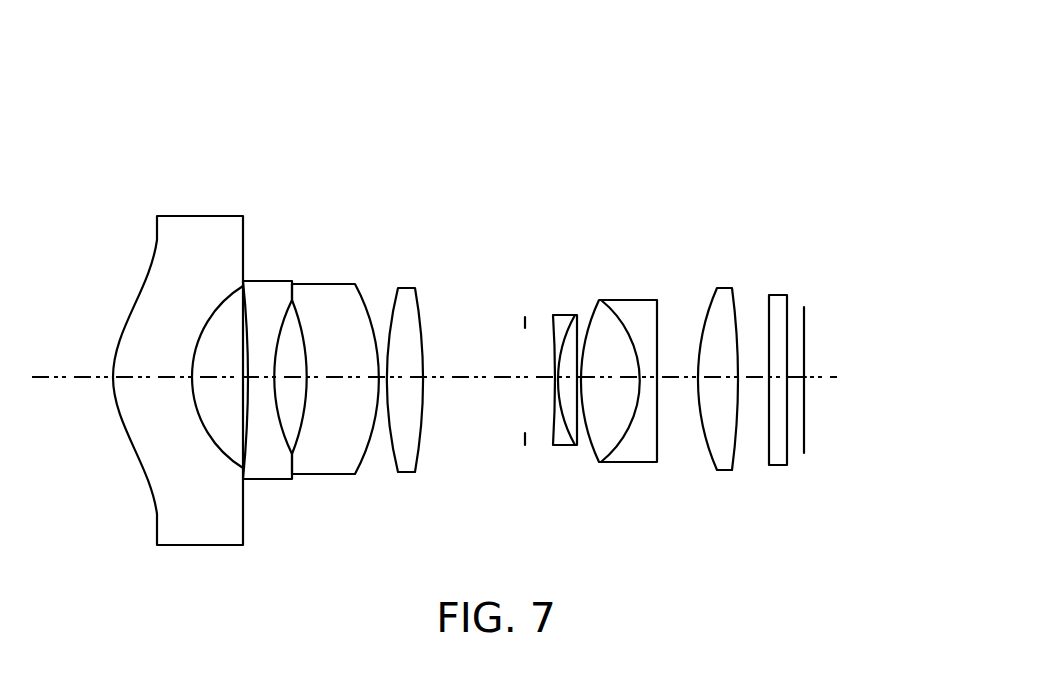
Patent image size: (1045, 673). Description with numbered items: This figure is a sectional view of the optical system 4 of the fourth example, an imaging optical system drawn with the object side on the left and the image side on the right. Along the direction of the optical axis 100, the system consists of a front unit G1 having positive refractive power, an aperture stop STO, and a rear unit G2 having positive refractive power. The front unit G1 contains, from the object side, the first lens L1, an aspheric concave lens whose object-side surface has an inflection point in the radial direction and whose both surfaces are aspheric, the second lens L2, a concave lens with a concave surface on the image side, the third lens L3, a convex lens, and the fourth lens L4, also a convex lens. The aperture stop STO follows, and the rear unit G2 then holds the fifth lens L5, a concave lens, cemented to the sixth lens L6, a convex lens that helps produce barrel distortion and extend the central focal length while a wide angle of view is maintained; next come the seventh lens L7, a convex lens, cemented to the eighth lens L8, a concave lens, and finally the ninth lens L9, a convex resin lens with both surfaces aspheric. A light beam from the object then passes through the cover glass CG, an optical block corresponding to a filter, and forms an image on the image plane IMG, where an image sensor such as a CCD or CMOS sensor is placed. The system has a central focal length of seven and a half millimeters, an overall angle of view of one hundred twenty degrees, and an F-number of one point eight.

The optical system 4 is at (440, 31).
The front unit G1 is at (112, 123).
The rear unit G2 is at (470, 118).
The first lens L1 is at (178, 252).
The second lens L2 is at (263, 280).
The third lens L3 is at (322, 283).
The fourth lens L4 is at (408, 298).
The fifth lens L5 is at (553, 315).
The sixth lens L6 is at (572, 337).
The seventh lens L7 is at (610, 315).
The eighth lens L8 is at (645, 315).
The ninth lens L9 is at (723, 297).
The aperture stop STO is at (525, 445).
The cover glass CG is at (779, 460).
The image plane IMG is at (804, 317).
The optical axis 100 is at (805, 377).